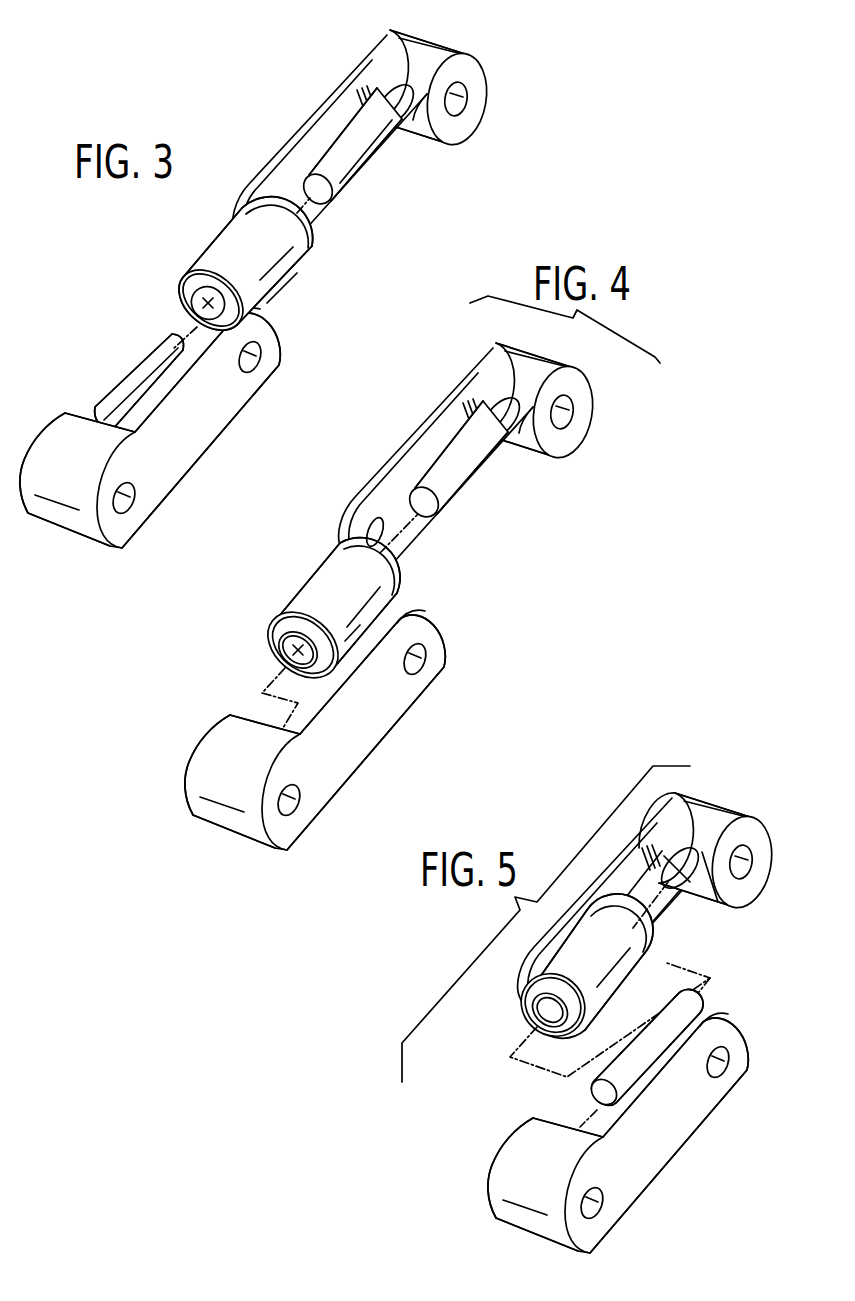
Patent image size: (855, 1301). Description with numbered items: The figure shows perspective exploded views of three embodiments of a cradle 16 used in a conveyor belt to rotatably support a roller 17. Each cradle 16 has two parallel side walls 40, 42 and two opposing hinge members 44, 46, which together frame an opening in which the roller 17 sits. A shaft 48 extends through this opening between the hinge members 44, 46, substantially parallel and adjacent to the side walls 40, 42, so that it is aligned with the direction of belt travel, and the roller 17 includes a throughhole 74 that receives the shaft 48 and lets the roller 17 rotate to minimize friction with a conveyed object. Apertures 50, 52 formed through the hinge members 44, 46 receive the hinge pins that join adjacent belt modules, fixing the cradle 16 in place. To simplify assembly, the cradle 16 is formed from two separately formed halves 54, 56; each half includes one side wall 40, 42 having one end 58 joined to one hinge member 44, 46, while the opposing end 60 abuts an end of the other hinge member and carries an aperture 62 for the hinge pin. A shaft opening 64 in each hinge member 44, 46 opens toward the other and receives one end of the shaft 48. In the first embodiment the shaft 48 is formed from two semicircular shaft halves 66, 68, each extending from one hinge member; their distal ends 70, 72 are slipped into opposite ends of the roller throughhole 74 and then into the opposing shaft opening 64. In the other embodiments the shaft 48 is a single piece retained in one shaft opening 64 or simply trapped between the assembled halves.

In FIG. 3, the cradle 16 is at (389, 194).
In FIG. 3, the roller 17 is at (258, 294).
In FIG. 4, the roller 17 is at (397, 597).
In FIG. 5, the roller 17 is at (647, 947).
In FIG. 3, the side wall 40 is at (301, 275).
In FIG. 4, the side wall 40 is at (469, 444).
In FIG. 5, the side wall 40 is at (648, 893).
In FIG. 3, the side wall 42 is at (163, 444).
In FIG. 3, the hinge member 44 is at (449, 84).
In FIG. 4, the hinge member 44 is at (540, 389).
In FIG. 5, the hinge member 44 is at (733, 813).
In FIG. 3, the hinge member 46 is at (57, 538).
In FIG. 4, the hinge member 46 is at (222, 840).
In FIG. 5, the hinge member 46 is at (520, 1220).
In FIG. 3, the shaft 48 is at (240, 255).
In FIG. 4, the shaft 48 is at (468, 487).
In FIG. 5, the shaft 48 is at (697, 1000).
In FIG. 3, the aperture 50 is at (483, 102).
In FIG. 3, the aperture 52 is at (137, 526).
In FIG. 3, the cradle half 54 is at (301, 275).
In FIG. 4, the cradle half 54 is at (469, 444).
In FIG. 5, the cradle half 54 is at (648, 865).
In FIG. 3, the cradle half 56 is at (163, 444).
In FIG. 4, the cradle half 56 is at (315, 746).
In FIG. 5, the cradle half 56 is at (607, 1136).
In FIG. 3, the end of side wall 58 is at (273, 295).
In FIG. 3, the opposing end of side wall 60 is at (248, 274).
In FIG. 3, the aperture 62 is at (271, 370).
In FIG. 4, the aperture 62 is at (378, 520).
In FIG. 3, the shaft opening 64 is at (382, 77).
In FIG. 4, the shaft opening 64 is at (516, 436).
In FIG. 5, the shaft opening 64 is at (682, 893).
In FIG. 3, the shaft half 66 is at (366, 178).
In FIG. 3, the shaft half 68 is at (125, 390).
In FIG. 3, the distal end of shaft half 70 is at (329, 234).
In FIG. 3, the distal end of shaft half 72 is at (170, 340).
In FIG. 3, the throughhole 74 is at (208, 285).